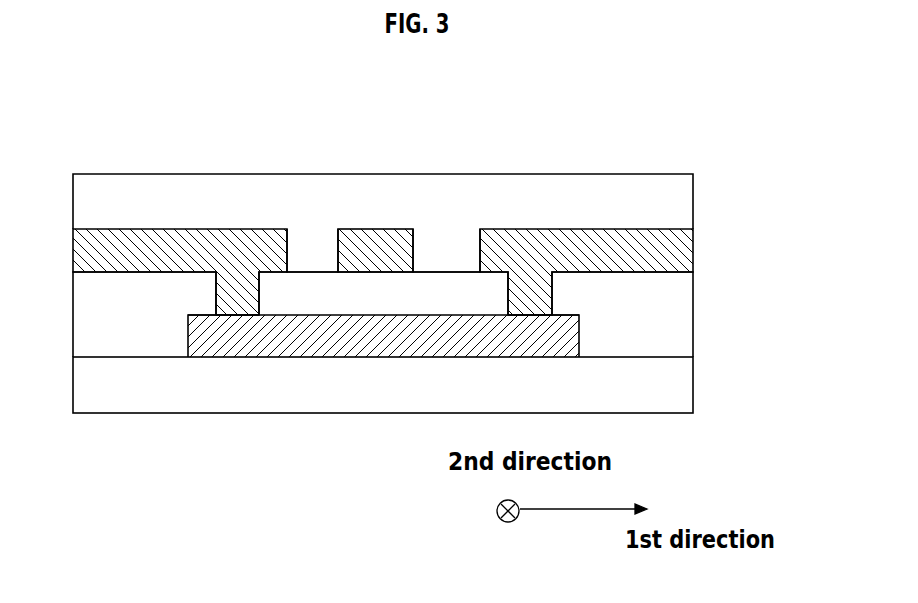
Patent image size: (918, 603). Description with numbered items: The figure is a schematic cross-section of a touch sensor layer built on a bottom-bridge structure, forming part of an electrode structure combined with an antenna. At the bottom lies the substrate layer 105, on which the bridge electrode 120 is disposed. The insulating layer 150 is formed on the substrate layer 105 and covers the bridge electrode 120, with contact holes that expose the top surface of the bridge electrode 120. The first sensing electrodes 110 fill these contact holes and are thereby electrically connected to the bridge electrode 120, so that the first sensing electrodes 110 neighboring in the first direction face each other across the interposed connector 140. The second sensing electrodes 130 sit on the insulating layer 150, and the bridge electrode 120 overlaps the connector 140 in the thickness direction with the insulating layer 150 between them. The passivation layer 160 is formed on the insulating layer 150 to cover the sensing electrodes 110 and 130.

The substrate layer 105 is at (693, 383).
The first sensing electrodes 110 is at (191, 240).
The bridge electrode 120 is at (378, 352).
The second sensing electrodes 130 is at (371, 186).
The connector 140 is at (388, 242).
The insulating layer 150 is at (693, 316).
The passivation layer 160 is at (693, 204).